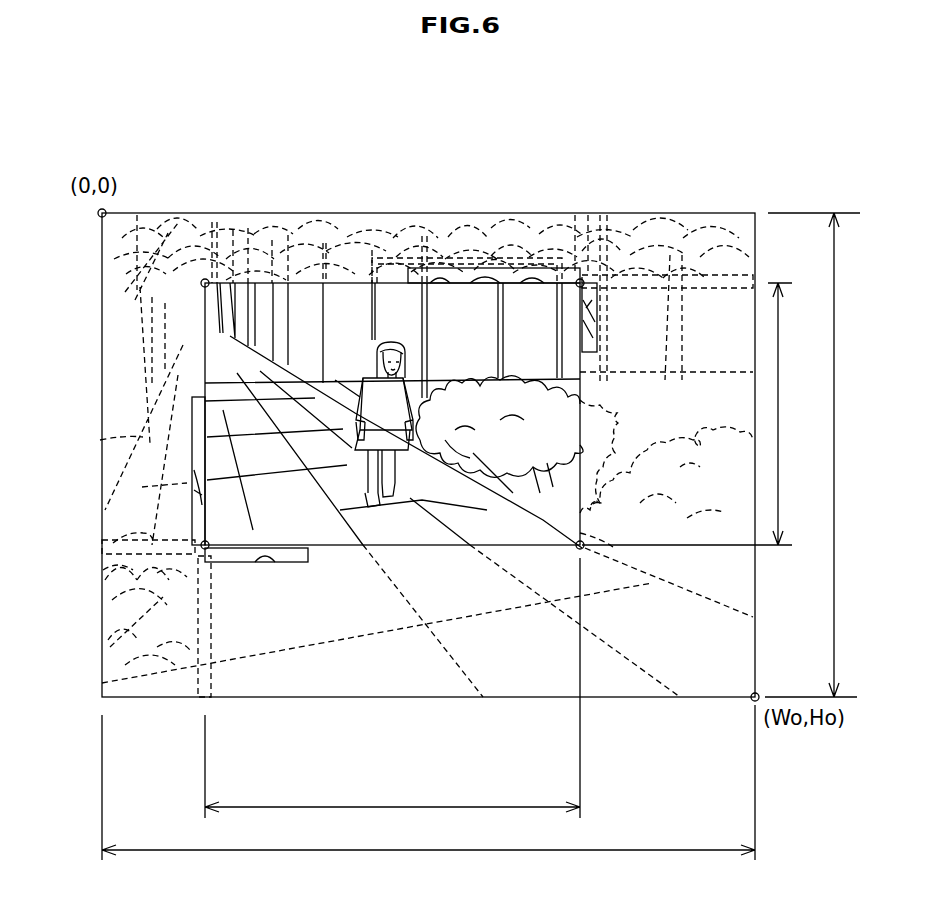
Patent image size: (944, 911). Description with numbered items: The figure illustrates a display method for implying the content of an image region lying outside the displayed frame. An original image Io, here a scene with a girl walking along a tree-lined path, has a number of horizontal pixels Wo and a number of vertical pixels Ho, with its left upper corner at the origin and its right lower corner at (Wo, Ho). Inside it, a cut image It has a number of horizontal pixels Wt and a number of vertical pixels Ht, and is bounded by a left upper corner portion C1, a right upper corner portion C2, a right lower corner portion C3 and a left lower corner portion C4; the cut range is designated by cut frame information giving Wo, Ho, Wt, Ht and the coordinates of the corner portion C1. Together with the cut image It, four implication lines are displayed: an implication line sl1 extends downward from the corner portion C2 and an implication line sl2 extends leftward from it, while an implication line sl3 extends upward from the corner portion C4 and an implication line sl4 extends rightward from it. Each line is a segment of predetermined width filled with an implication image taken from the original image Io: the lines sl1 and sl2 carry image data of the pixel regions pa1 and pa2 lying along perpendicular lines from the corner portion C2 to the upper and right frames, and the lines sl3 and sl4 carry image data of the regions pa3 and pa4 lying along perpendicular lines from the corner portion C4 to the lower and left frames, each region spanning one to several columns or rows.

The original image Io is at (422, 213).
The cut image It is at (338, 283).
The left upper corner portion C1 is at (207, 279).
The right upper corner portion C2 is at (582, 281).
The right lower corner portion C3 is at (583, 548).
The left lower corner portion C4 is at (218, 563).
The implication line sl1 is at (593, 313).
The implication line sl2 is at (495, 268).
The implication line sl3 is at (192, 468).
The implication line sl4 is at (305, 562).
The pixel region pa1 is at (563, 265).
The pixel region pa2 is at (737, 272).
The pixel region pa3 is at (174, 697).
The pixel region pa4 is at (103, 569).
The number of vertical pixels of the original image Ho is at (817, 455).
The number of vertical pixels of the cut image Ht is at (696, 414).
The number of horizontal pixels of the original image Wo is at (428, 782).
The number of horizontal pixels of the cut image Wt is at (392, 688).